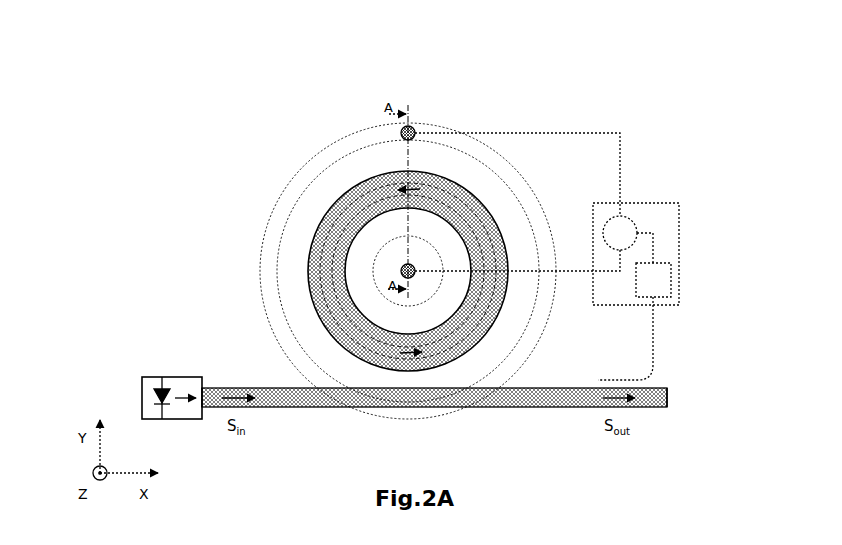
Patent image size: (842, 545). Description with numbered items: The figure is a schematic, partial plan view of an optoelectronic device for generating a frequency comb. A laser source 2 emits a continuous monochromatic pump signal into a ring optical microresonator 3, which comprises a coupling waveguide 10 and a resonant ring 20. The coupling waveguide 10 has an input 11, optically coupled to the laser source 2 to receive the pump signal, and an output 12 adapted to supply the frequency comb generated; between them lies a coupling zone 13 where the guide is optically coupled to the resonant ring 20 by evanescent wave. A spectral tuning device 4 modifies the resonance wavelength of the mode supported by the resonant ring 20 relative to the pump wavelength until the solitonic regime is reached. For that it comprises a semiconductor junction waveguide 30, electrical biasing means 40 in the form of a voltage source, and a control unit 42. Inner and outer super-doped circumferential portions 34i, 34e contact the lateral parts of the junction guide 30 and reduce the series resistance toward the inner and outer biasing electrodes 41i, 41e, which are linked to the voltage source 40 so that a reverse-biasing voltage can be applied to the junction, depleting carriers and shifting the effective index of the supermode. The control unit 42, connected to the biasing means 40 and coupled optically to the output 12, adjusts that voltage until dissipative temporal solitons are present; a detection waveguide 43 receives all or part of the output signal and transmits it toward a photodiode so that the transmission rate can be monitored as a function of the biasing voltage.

The laser source 2 is at (170, 375).
The ring optical microresonator 3 is at (220, 235).
The spectral tuning device 4 is at (680, 254).
The coupling waveguide 10 is at (258, 387).
The input 11 is at (210, 409).
The output 12 is at (661, 409).
The coupling zone 13 is at (401, 409).
The resonant ring 20 is at (318, 222).
The semiconductor junction waveguide 30 is at (315, 252).
The outer super-doped portion 34e is at (311, 160).
The inner super-doped portion 34i is at (375, 258).
The electrical biasing means 40 is at (632, 218).
The outer biasing electrode 41e is at (417, 128).
The inner biasing electrode 41i is at (414, 264).
The control unit 42 is at (672, 280).
The detection waveguide 43 is at (655, 348).